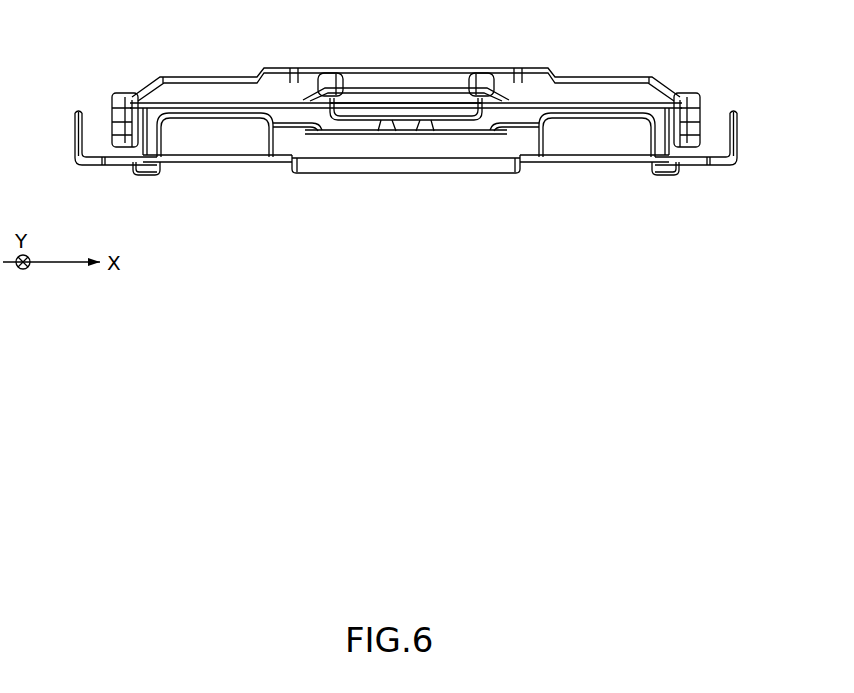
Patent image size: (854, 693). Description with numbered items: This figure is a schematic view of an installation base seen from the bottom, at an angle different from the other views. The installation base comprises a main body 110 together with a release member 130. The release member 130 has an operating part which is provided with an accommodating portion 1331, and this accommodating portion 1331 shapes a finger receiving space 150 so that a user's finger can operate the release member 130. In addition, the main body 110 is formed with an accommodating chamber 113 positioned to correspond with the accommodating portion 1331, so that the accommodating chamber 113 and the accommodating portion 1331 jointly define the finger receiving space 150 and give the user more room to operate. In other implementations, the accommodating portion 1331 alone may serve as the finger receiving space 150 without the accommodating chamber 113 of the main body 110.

The main body 110 is at (305, 117).
The accommodating chamber 113 is at (415, 120).
The release member 130 is at (223, 97).
The accommodating portion 1331 is at (463, 75).
The finger receiving space 150 is at (360, 99).